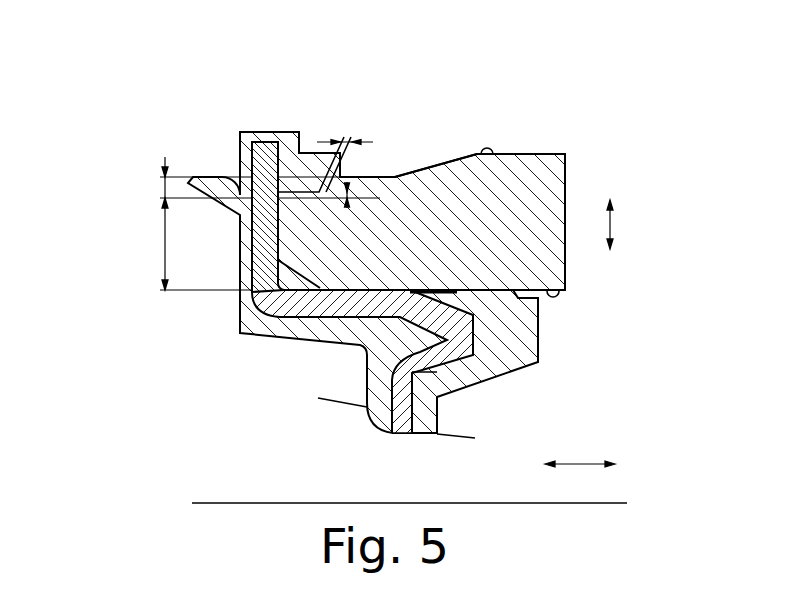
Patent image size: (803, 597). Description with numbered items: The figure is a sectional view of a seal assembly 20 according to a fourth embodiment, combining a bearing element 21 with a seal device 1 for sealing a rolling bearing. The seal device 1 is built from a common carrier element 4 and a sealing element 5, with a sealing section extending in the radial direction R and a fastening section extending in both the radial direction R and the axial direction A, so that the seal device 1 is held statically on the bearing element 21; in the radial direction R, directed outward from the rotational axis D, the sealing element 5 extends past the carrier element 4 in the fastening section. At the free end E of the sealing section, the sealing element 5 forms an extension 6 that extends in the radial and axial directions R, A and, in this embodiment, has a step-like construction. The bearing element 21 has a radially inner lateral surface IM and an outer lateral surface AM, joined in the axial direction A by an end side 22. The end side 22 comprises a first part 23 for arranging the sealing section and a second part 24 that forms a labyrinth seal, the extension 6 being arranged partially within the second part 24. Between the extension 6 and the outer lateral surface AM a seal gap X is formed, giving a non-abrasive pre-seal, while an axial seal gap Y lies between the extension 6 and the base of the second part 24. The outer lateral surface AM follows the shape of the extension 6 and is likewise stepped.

The seal device 1 is at (590, 90).
The seal assembly 20 is at (362, 282).
The bearing element 21 is at (542, 243).
The end side 22 is at (262, 266).
The first part 23 is at (162, 242).
The second part 24 is at (162, 187).
The carrier element 4 is at (433, 357).
The sealing element 5 is at (428, 402).
The extension 6 is at (304, 140).
The free end E is at (262, 120).
The seal gap X is at (360, 196).
The axial seal gap Y is at (348, 126).
The outer lateral surface AM is at (487, 148).
The inner lateral surface IM is at (553, 299).
The radial direction R is at (624, 224).
The axial direction A is at (580, 478).
The rotational axis D is at (243, 503).